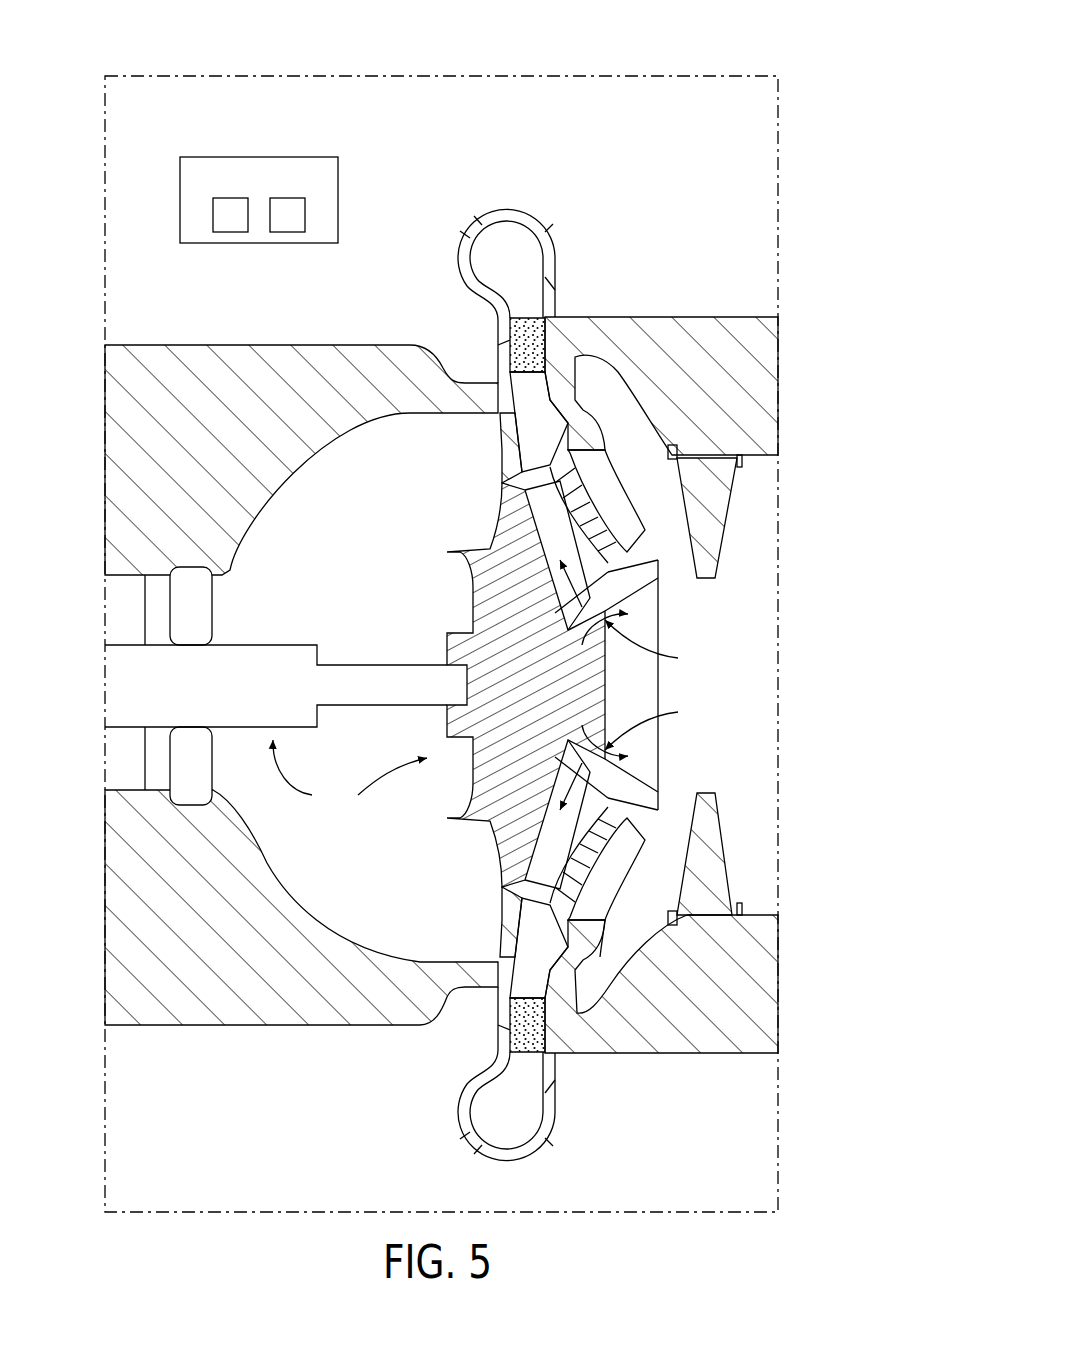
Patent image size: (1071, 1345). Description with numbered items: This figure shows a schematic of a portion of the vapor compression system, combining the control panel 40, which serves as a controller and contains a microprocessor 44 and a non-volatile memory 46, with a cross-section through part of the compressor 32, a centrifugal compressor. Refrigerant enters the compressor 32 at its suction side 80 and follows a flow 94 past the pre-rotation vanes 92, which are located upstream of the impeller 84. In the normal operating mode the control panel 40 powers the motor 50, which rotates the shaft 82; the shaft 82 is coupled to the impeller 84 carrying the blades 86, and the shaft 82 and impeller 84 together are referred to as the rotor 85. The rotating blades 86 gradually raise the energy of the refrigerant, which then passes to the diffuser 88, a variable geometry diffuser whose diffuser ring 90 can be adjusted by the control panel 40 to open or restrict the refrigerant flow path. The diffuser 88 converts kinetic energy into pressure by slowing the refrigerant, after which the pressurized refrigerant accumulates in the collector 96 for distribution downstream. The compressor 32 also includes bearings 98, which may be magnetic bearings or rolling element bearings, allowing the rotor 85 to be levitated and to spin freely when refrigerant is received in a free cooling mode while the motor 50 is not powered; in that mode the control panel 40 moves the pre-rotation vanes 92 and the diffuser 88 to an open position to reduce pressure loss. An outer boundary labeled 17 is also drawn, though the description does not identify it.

The turbocharger system 17 is at (663, 47).
The control panel 40 is at (258, 157).
The microprocessor 44 is at (232, 232).
The non-volatile memory 46 is at (288, 232).
The compressor 32 is at (224, 343).
The motor 50 is at (110, 612).
The collector 96 is at (514, 250).
The diffuser 88 is at (492, 336).
The diffuser ring 90 is at (528, 323).
The suction side 80 is at (808, 520).
The impeller 84 is at (491, 546).
The bearings 98 is at (208, 607).
The shaft 82 is at (294, 645).
The pre-rotation vanes 92 is at (723, 553).
The flow 94 is at (657, 652).
The blades 86 is at (652, 652).
The rotor 85 is at (350, 775).